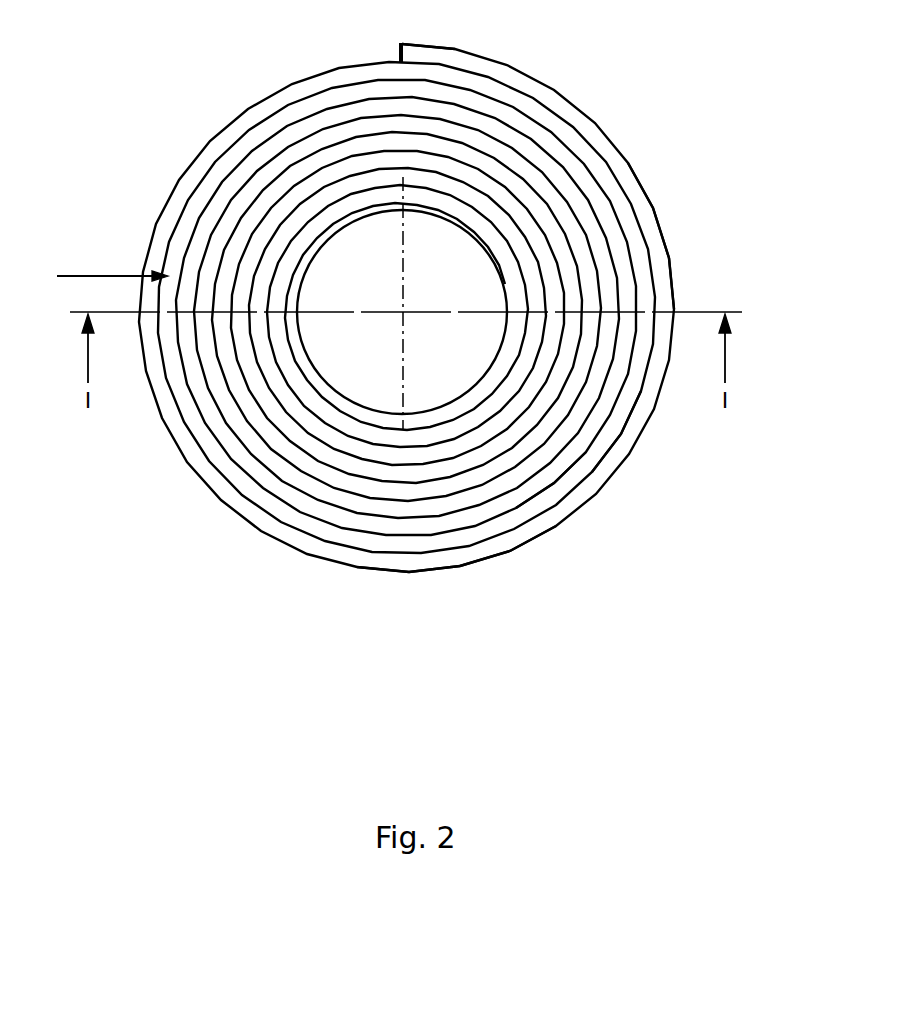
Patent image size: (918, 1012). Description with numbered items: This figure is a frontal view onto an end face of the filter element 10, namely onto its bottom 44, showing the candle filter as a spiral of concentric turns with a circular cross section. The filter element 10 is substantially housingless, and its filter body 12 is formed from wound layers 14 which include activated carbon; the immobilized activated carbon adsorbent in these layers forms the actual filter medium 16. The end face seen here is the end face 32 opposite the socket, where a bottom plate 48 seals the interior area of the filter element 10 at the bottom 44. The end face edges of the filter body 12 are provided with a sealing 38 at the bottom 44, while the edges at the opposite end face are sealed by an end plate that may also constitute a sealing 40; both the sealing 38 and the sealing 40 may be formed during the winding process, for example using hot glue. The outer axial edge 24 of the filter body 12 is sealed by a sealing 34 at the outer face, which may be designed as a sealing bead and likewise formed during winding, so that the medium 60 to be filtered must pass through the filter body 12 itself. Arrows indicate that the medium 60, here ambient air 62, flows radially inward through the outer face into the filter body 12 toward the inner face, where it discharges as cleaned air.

The filter element 10 is at (664, 86).
The filter body 12 is at (675, 207).
The wound layers 14 is at (672, 283).
The filter medium 16 is at (632, 433).
The axial edge 24 is at (397, 50).
The sealing 34 is at (428, 52).
The end face 32 is at (405, 572).
The sealing 38 is at (498, 548).
The sealing 40 is at (570, 483).
The bottom 44 is at (482, 353).
The bottom plate 48 is at (402, 312).
The medium to be filtered 60 is at (75, 274).
The ambient air 62 is at (112, 276).